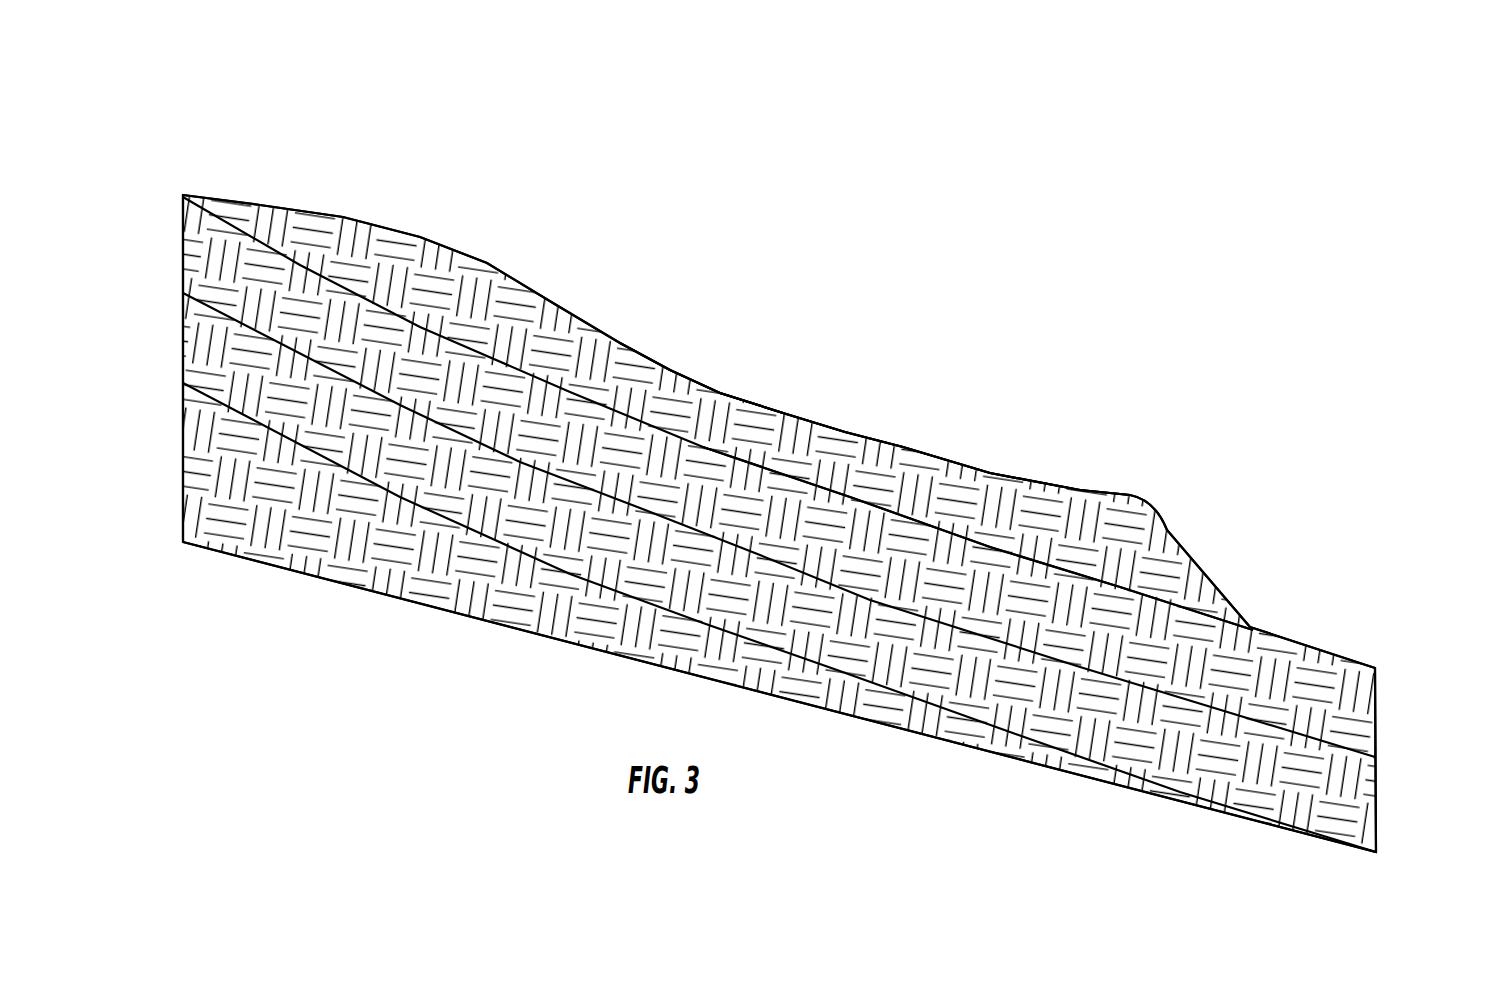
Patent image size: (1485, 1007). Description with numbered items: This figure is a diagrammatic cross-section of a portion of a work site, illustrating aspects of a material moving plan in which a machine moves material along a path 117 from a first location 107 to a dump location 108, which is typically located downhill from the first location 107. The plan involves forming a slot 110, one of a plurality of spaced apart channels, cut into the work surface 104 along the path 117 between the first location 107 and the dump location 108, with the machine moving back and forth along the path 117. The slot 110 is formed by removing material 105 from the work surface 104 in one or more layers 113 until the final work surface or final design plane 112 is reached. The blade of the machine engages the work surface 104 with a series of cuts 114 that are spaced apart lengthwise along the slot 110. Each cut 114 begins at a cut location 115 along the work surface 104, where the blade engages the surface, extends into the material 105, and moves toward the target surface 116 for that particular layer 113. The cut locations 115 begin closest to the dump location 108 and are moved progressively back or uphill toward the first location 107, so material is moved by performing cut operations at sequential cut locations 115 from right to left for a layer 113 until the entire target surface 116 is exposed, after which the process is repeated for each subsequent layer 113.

The work surface 104 is at (487, 263).
The material 105 is at (337, 253).
The first location 107 is at (174, 125).
The dump location 108 is at (1430, 646).
The slot 110 is at (1298, 529).
The final design plane 112 is at (310, 574).
The layer 113 is at (256, 470).
The cut 114 is at (1097, 582).
The cut location 115 is at (783, 413).
The target surface 116 is at (215, 403).
The path 117 is at (712, 260).